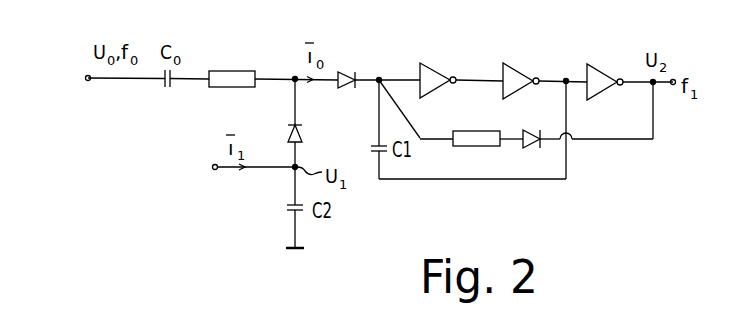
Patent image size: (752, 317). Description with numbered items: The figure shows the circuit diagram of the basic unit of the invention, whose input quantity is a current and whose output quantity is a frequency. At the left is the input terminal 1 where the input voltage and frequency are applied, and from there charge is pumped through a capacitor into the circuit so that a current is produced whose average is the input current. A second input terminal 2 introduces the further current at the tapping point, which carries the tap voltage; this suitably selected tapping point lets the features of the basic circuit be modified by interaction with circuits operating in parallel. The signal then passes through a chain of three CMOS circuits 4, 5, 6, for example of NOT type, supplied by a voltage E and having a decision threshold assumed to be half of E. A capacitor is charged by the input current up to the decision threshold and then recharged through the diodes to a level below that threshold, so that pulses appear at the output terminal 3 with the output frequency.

The first input terminal 1 is at (86, 75).
The second input terminal 2 is at (212, 167).
The output terminal 3 is at (677, 79).
The CMOS circuit 4 is at (432, 64).
The CMOS circuit 5 is at (522, 64).
The CMOS circuit 6 is at (612, 64).